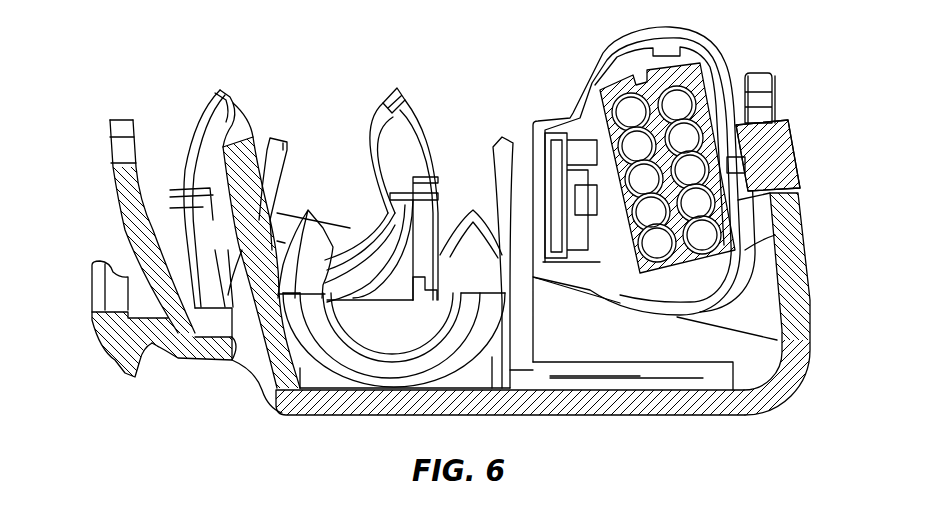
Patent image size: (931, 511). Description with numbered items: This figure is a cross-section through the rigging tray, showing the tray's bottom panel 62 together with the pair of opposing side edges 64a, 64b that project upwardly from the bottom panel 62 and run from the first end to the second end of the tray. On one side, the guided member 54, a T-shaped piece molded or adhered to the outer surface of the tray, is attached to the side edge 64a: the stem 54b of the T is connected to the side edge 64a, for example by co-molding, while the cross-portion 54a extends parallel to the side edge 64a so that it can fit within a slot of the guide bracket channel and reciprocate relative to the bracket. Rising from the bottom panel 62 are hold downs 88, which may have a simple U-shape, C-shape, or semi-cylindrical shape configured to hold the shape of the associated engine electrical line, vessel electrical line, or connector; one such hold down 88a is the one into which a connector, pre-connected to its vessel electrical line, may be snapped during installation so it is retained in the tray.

The guided member 54 is at (170, 356).
The cross-portion 54a is at (100, 344).
The stem 54b is at (157, 348).
The bottom panel 62 is at (603, 348).
The side edge 64a is at (117, 230).
The side edge 64b is at (798, 257).
The hold downs 88 is at (300, 84).
The hold down 88a is at (220, 135).